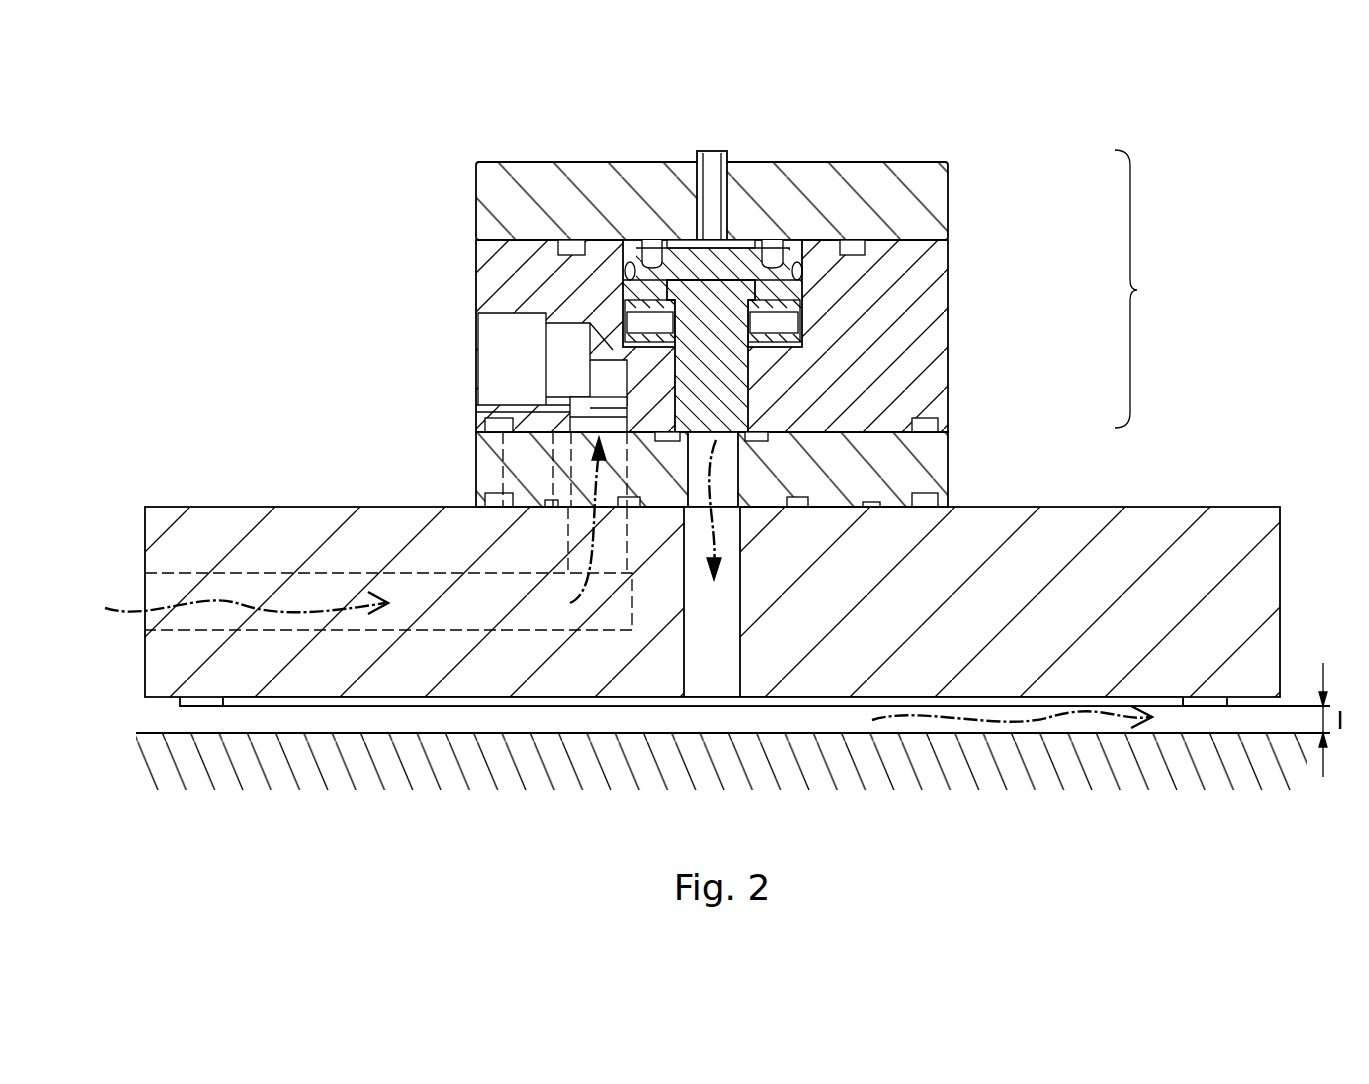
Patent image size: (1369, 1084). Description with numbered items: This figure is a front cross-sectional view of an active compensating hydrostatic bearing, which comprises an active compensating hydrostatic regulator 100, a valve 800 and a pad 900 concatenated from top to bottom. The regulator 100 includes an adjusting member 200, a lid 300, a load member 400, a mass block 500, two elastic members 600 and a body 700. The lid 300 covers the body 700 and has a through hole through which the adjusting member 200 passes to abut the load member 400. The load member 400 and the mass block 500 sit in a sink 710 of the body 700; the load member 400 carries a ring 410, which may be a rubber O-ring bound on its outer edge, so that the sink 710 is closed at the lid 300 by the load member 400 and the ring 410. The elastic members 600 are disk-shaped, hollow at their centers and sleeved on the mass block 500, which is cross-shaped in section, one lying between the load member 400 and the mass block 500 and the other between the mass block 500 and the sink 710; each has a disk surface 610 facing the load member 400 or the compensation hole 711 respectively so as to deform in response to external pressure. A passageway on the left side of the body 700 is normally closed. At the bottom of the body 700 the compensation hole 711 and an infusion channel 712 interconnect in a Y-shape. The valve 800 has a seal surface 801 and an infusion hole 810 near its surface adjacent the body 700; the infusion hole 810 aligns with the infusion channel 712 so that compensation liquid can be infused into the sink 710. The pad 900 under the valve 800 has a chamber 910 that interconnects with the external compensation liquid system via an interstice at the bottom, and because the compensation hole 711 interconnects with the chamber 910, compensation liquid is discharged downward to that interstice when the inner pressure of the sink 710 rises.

The active compensating hydrostatic regulator 100 is at (770, 295).
The adjusting member 200 is at (716, 150).
The lid 300 is at (935, 205).
The load member 400 is at (790, 240).
The ring 410 is at (765, 262).
The mass block 500 is at (608, 318).
The elastic member 600 is at (775, 305).
The disk surface 610 is at (800, 290).
The body 700 is at (478, 318).
The sink 710 is at (625, 305).
The compensation hole 711 is at (722, 436).
The infusion channel 712 is at (612, 385).
The valve 800 is at (478, 437).
The seal surface 801 is at (600, 412).
The infusion hole 810 is at (548, 482).
The pad 900 is at (175, 542).
The chamber 910 is at (245, 700).